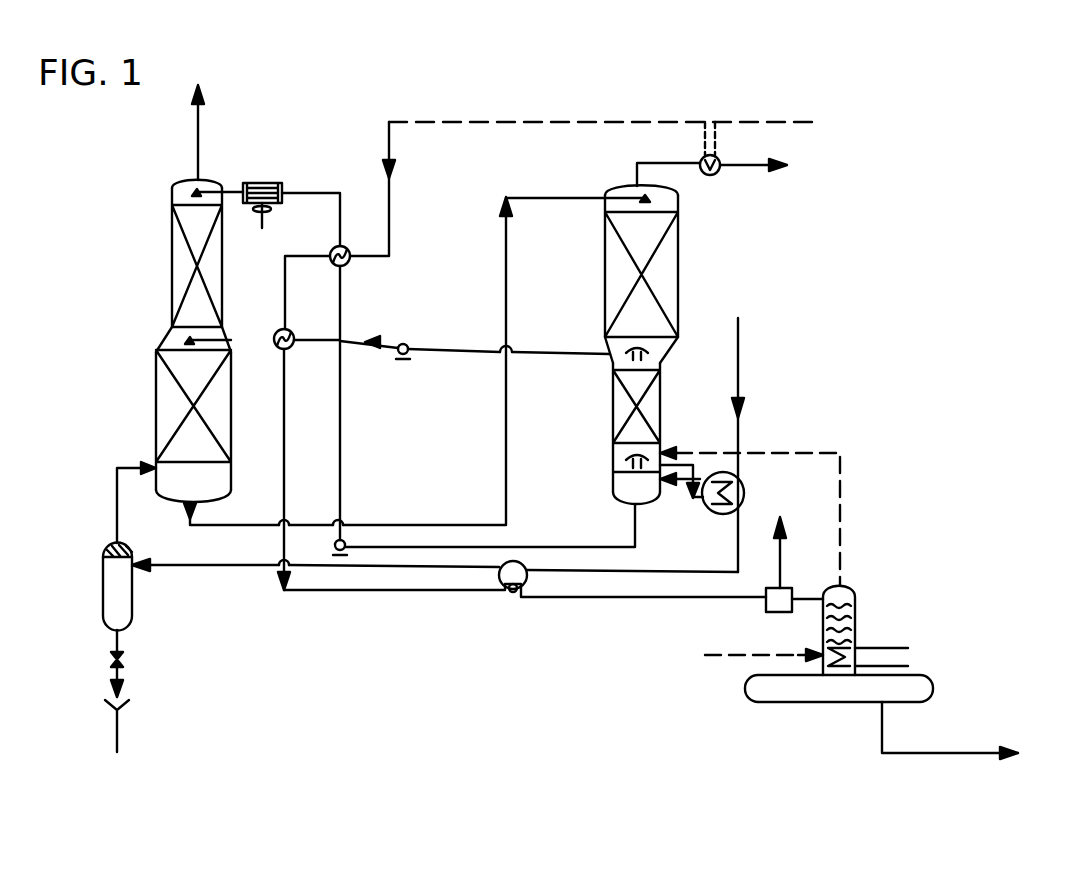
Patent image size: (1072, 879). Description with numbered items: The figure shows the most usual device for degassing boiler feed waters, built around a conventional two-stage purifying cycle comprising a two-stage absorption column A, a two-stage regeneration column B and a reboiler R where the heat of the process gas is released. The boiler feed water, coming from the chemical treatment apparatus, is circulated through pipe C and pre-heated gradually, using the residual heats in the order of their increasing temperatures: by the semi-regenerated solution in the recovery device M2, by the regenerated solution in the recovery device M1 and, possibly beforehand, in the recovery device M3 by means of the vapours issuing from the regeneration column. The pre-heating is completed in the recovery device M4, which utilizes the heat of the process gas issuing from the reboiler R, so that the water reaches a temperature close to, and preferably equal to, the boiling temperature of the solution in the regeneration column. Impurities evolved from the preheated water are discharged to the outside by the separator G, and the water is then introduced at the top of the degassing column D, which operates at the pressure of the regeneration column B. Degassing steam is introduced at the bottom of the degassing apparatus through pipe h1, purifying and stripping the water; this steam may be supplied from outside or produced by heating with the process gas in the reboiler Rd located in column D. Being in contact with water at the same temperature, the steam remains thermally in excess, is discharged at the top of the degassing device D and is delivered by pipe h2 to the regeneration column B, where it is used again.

The two-stage absorption column A is at (181, 293).
The two-stage regeneration column B is at (646, 333).
The pipe C is at (601, 139).
The degassing column D is at (865, 630).
The separator G is at (794, 564).
The reboiler R is at (702, 445).
The reboiler Rd is at (881, 716).
The recovery device M1 is at (340, 331).
The recovery device M2 is at (336, 459).
The recovery device M3 is at (743, 163).
The recovery device M4 is at (444, 580).
The pipe h1 is at (764, 644).
The pipe h2 is at (763, 516).